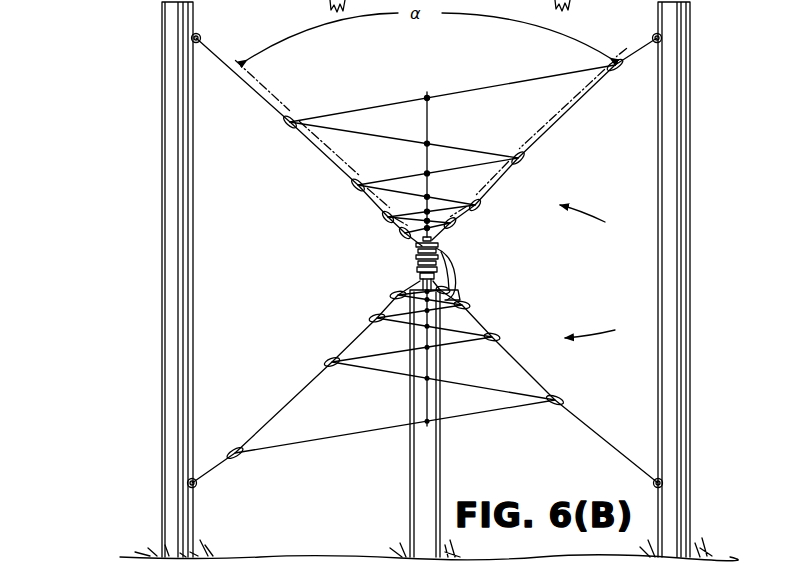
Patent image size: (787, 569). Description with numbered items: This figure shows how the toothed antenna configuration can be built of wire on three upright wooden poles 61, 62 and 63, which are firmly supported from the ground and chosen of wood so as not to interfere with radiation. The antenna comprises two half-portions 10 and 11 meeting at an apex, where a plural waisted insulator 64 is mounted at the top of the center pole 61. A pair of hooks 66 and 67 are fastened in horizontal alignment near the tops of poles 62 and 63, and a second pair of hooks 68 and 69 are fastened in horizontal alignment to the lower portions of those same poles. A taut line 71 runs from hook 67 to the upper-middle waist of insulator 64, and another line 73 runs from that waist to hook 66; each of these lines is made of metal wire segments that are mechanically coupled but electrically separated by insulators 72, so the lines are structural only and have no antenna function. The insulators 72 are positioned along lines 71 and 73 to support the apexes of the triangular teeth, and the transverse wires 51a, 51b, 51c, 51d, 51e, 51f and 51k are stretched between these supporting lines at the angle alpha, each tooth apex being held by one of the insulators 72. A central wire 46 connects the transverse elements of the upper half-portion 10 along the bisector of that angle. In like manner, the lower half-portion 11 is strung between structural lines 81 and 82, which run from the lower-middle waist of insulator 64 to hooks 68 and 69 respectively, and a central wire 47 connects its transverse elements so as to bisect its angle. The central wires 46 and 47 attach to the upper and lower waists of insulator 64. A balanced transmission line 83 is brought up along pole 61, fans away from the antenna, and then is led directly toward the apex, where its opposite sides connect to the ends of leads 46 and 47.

The upper half-portion 10 is at (597, 224).
The lower half-portion 11 is at (603, 334).
The central wire 46 is at (428, 118).
The central wire 47 is at (427, 411).
The transverse wire 51a is at (481, 78).
The transverse wire 51b is at (489, 153).
The transverse wire 51c is at (391, 171).
The transverse wire 51d is at (452, 194).
The transverse wire 51e is at (385, 214).
The transverse wire 51f is at (455, 222).
The transverse wire 51k is at (411, 237).
The pole 61 is at (410, 521).
The pole 62 is at (690, 520).
The pole 63 is at (170, 515).
The plural waisted insulator 64 is at (418, 262).
The hook 66 is at (653, 38).
The hook 67 is at (200, 38).
The hook 68 is at (656, 479).
The hook 69 is at (193, 479).
The taut line 71 is at (262, 97).
The insulator 72 is at (352, 185).
The line segment 73 is at (572, 111).
The structural line 81 is at (586, 421).
The structural line 82 is at (278, 409).
The balanced transmission line 83 is at (456, 297).